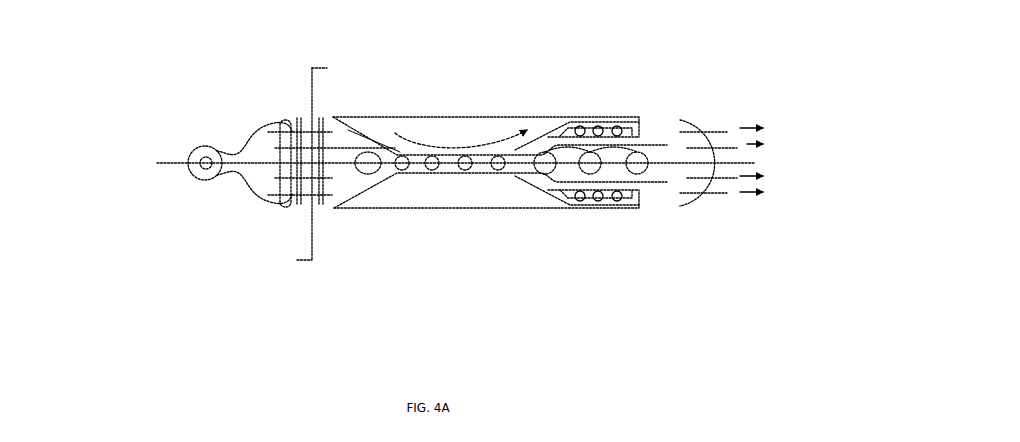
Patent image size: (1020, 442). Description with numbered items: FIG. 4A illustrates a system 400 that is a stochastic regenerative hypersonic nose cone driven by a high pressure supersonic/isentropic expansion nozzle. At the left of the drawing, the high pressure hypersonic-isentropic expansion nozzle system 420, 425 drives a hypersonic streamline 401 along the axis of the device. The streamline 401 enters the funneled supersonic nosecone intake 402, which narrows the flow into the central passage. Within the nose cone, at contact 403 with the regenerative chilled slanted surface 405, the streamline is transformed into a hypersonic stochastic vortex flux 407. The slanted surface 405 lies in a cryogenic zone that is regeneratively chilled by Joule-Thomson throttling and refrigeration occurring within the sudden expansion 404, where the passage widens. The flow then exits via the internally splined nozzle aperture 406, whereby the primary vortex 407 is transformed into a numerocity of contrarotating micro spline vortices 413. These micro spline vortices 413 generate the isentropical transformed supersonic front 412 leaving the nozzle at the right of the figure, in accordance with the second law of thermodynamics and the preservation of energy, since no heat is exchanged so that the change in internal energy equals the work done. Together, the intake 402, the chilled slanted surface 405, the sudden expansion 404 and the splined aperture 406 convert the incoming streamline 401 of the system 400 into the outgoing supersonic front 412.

The system 400 is at (182, 258).
The hypersonic streamline 401 is at (333, 127).
The funneled supersonic nosecone intake 402 is at (333, 210).
The contact 403 is at (358, 140).
The sudden expansion 404 is at (528, 183).
The regenerative chilled slanted surface 405 is at (416, 146).
The internally splined nozzle aperture 406 is at (578, 208).
The hypersonic stochastic vortex flux 407 is at (655, 146).
The isentropical transformed supersonic front 412 is at (730, 150).
The contrarotating micro spline vortices 413 is at (607, 192).
The high pressure hypersonic-isentropic expansion nozzle system 420 is at (208, 173).
The high pressure hypersonic-isentropic expansion nozzle system 425 is at (250, 185).